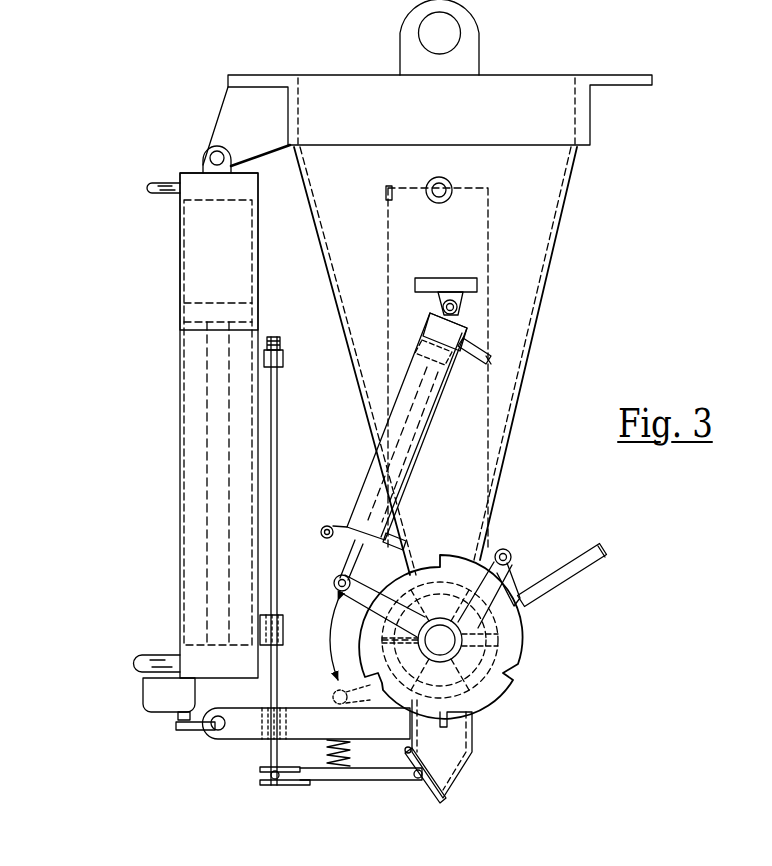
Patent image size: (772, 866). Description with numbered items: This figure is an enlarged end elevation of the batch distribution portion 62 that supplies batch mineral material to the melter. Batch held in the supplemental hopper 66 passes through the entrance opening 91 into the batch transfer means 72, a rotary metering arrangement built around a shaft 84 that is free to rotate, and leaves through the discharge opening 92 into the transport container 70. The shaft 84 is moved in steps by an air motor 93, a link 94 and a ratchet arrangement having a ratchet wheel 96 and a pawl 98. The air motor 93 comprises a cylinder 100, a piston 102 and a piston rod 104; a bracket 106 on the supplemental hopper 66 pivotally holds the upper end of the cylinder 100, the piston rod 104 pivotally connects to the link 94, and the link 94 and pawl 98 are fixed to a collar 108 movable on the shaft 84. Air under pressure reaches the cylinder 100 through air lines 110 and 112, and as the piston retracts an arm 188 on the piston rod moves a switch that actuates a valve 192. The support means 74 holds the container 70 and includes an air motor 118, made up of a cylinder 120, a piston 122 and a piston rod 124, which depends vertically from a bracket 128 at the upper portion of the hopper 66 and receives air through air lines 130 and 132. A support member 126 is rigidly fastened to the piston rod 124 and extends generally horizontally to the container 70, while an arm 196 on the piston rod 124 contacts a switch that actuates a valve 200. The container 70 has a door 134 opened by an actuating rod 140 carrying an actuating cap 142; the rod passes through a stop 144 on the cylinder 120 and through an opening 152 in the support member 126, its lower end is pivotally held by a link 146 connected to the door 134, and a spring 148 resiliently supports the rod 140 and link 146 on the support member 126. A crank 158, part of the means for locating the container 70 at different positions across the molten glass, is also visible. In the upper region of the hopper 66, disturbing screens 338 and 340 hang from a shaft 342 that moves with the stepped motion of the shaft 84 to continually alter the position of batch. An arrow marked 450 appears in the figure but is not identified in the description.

The batch distribution portion 62 is at (550, 392).
The supplemental hopper 66 is at (555, 262).
The transport container 70 is at (470, 760).
The batch transfer means 72 is at (523, 648).
The support means 74 is at (130, 676).
The shaft 84 is at (500, 640).
The entrance opening 91 is at (507, 550).
The discharge opening 92 is at (478, 725).
The air motor 93 is at (440, 418).
The link 94 is at (380, 575).
The ratchet wheel 96 is at (485, 545).
The pawl 98 is at (520, 565).
The cylinder 100 is at (425, 322).
The piston 102 is at (462, 328).
The piston rod 104 is at (345, 558).
The bracket 106 is at (446, 282).
The collar 108 is at (532, 643).
The air line 110 is at (490, 355).
The air line 112 is at (398, 540).
The air motor 118 is at (177, 345).
The cylinder 120 is at (180, 267).
The piston 122 is at (205, 302).
The piston rod 124 is at (207, 475).
The support member 126 is at (245, 740).
The bracket 128 is at (222, 108).
The air line 130 is at (152, 185).
The air line 132 is at (152, 655).
The door 134 is at (425, 782).
The actuating rod 140 is at (279, 398).
The actuating cap 142 is at (318, 332).
The stop 144 is at (318, 594).
The link 146 is at (390, 782).
The spring 148 is at (355, 768).
The opening 152 is at (262, 735).
The crank 158 is at (603, 548).
The arm 188 is at (340, 526).
The valve 200 is at (334, 528).
The valve 192 is at (143, 700).
The arm 196 is at (180, 727).
The disturbing screen 338 is at (480, 230).
The disturbing screen 340 is at (385, 222).
The shaft 342 is at (440, 184).
The arm swing direction 450 is at (288, 640).